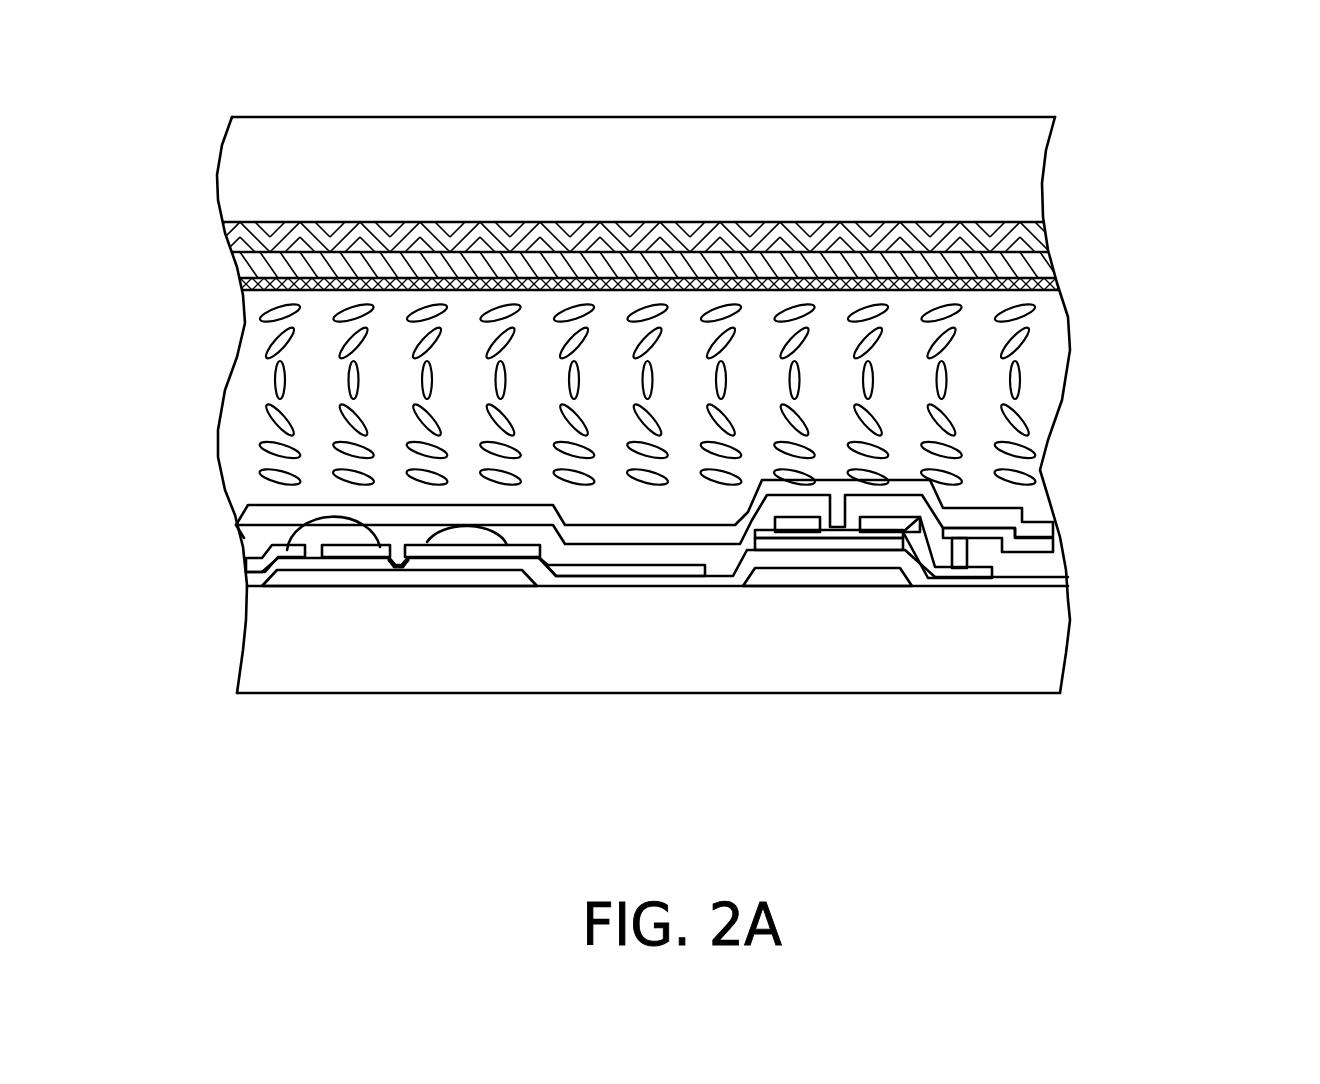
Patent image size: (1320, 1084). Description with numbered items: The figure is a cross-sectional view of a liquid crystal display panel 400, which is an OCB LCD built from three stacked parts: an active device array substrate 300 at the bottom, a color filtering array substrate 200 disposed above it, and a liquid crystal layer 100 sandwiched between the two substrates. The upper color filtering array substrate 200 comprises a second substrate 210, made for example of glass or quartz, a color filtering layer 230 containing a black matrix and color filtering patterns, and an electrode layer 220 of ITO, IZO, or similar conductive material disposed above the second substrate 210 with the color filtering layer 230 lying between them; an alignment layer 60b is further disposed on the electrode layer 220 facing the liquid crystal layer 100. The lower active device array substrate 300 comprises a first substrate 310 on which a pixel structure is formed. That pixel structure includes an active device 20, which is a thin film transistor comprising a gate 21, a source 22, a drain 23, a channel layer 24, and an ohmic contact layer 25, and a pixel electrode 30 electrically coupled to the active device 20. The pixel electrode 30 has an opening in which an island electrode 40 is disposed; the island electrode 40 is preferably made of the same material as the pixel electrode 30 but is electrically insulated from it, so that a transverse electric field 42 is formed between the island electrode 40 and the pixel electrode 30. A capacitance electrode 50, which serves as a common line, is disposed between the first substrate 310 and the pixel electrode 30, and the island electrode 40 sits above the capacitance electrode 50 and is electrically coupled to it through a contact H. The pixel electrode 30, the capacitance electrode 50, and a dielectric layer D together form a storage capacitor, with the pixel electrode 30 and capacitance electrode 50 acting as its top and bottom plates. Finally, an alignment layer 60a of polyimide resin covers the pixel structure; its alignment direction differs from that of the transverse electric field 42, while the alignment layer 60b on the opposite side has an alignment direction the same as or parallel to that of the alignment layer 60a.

The liquid crystal display panel 400 is at (692, 442).
The color filtering array substrate 200 is at (741, 230).
The second substrate 210 is at (701, 169).
The color filtering layer 230 is at (701, 227).
The electrode layer 220 is at (701, 274).
The alignment layer 60b is at (701, 311).
The liquid crystal layer 100 is at (744, 396).
The active device array substrate 300 is at (642, 442).
The first substrate 310 is at (652, 690).
The alignment layer 60a is at (577, 512).
The transverse electric field 42 is at (397, 294).
The dielectric layer D is at (211, 577).
The contact H is at (386, 670).
The island electrode 40 is at (431, 663).
The capacitance electrode 50 is at (434, 689).
The pixel electrode 30 is at (623, 669).
The active device 20 is at (866, 681).
The gate 21 is at (827, 675).
The source 22 is at (949, 649).
The drain 23 is at (782, 649).
The channel layer 24 is at (829, 656).
The ohmic contact layer 25 is at (902, 649).